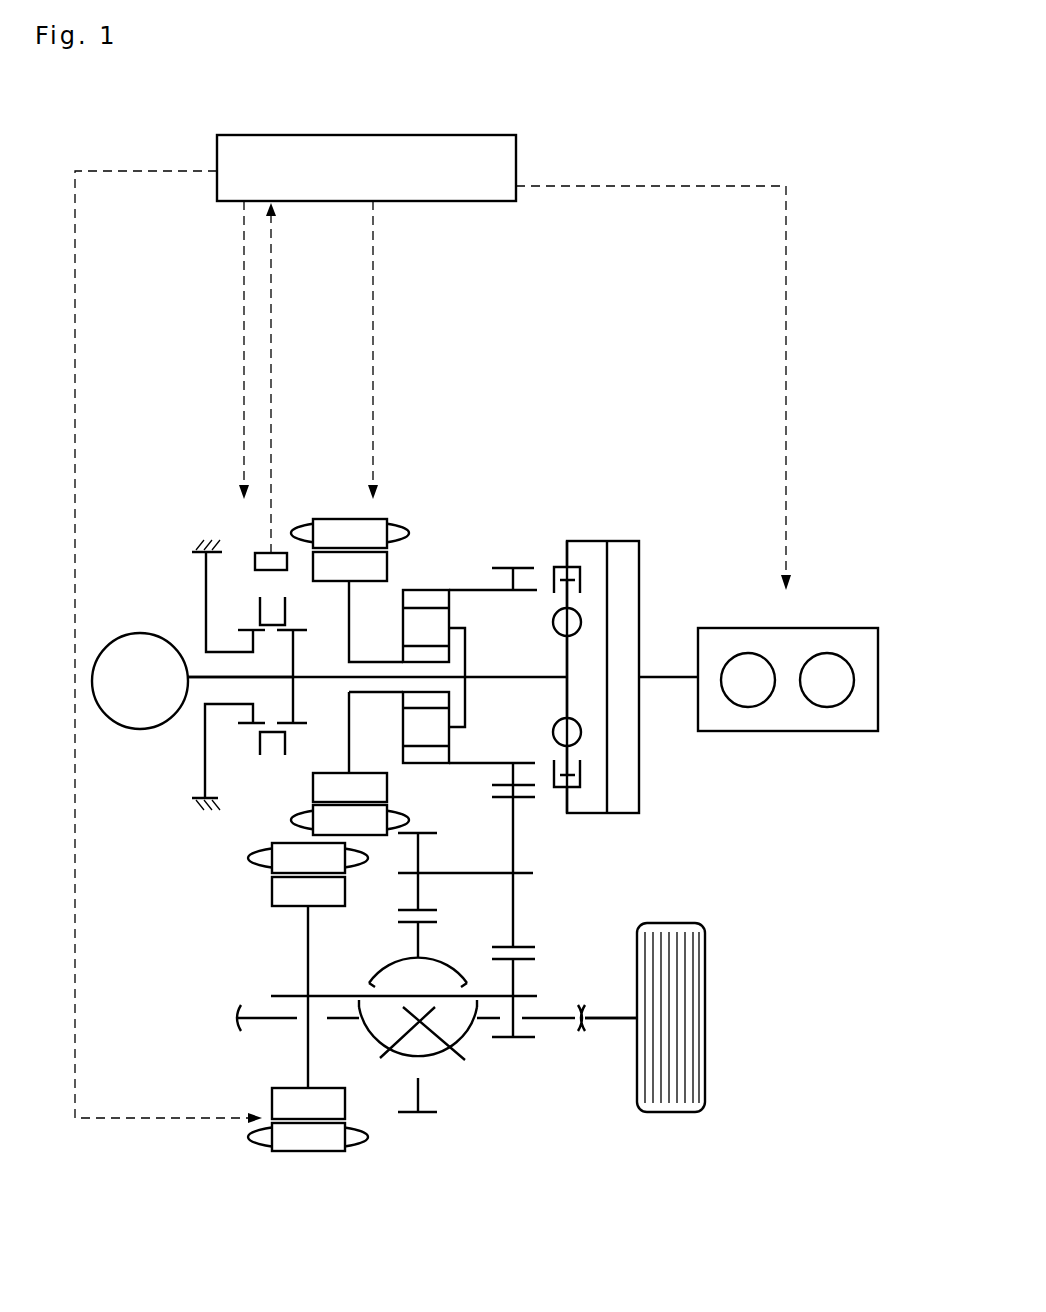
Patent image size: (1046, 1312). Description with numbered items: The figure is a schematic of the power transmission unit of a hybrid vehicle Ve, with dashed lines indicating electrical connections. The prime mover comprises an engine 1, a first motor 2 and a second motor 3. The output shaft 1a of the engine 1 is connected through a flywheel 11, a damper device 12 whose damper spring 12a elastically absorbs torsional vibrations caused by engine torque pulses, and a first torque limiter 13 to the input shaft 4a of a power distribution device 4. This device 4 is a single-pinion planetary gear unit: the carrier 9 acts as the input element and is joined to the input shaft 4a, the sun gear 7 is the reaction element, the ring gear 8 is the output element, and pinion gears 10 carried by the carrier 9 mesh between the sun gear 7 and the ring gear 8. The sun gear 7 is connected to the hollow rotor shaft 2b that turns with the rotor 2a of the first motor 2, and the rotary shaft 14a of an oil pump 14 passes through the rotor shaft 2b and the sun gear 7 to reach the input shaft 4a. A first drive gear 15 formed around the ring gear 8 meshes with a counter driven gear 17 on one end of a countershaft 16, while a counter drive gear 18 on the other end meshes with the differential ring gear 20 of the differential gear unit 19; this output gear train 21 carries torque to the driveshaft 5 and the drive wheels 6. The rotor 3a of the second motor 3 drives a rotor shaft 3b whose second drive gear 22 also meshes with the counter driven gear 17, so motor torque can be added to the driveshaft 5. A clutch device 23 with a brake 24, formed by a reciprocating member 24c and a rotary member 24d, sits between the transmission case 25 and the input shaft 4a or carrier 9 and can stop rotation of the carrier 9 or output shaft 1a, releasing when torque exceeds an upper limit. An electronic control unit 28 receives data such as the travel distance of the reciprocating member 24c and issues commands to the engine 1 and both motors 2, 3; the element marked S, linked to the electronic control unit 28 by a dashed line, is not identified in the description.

The engine 1 is at (790, 731).
The output shaft 1a is at (660, 677).
The first motor 2 is at (325, 490).
The rotor 2a is at (312, 788).
The hollow rotor shaft 2b is at (383, 662).
The second motor 3 is at (265, 1168).
The rotor 3a is at (270, 892).
The rotor shaft 3b is at (345, 994).
The power distribution device 4 is at (430, 513).
The input shaft 4a is at (527, 677).
The driveshaft 5 is at (604, 1022).
The drive wheels 6 is at (668, 1112).
The sun gear 7 is at (401, 698).
The ring gear 8 is at (422, 596).
The carrier 9 is at (467, 640).
The pinion gears 10 is at (443, 740).
The flywheel 11 is at (622, 569).
The damper device 12 is at (592, 738).
The damper spring 12a is at (555, 728).
The first torque limiter 13 is at (556, 553).
The oil pump 14 is at (126, 636).
The rotary shaft 14a is at (183, 700).
The first drive gear 15 is at (520, 568).
The countershaft 16 is at (468, 874).
The counter driven gear 17 is at (495, 796).
The counter drive gear 18 is at (431, 831).
The differential gear unit 19 is at (455, 1082).
The differential ring gear 20 is at (414, 1114).
The output gear train 21 is at (550, 887).
The second drive gear 22 is at (521, 1040).
The clutch device 23 is at (240, 550).
The brake 24 is at (290, 618).
The reciprocating member 24c is at (222, 650).
The rotary member 24d is at (294, 656).
The transmission case 25 is at (205, 810).
The electronic control unit 28 is at (331, 135).
The sensor S is at (266, 553).
The hybrid vehicle Ve is at (651, 487).